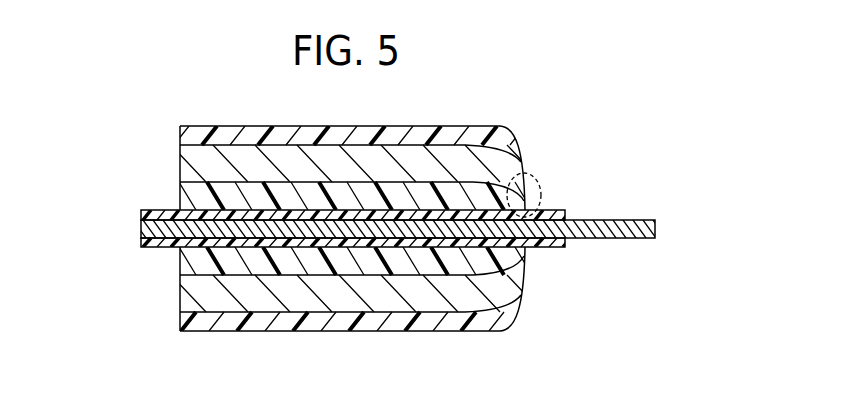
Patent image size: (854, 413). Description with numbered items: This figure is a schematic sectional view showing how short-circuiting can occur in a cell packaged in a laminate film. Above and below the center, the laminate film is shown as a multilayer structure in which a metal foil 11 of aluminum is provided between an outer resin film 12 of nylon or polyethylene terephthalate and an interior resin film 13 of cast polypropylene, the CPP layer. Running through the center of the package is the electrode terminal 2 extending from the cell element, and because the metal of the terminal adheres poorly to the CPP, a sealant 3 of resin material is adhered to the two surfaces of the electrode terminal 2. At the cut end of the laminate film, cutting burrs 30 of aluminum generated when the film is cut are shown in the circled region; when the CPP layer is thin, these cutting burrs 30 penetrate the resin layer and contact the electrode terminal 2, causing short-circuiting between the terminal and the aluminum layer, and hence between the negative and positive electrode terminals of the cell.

The electrode terminal 2 is at (640, 218).
The sealant 3 is at (578, 252).
The metal foil 11 is at (188, 171).
The resin film 12 is at (188, 137).
The resin film 13 is at (188, 258).
The cutting burrs 30 is at (533, 172).